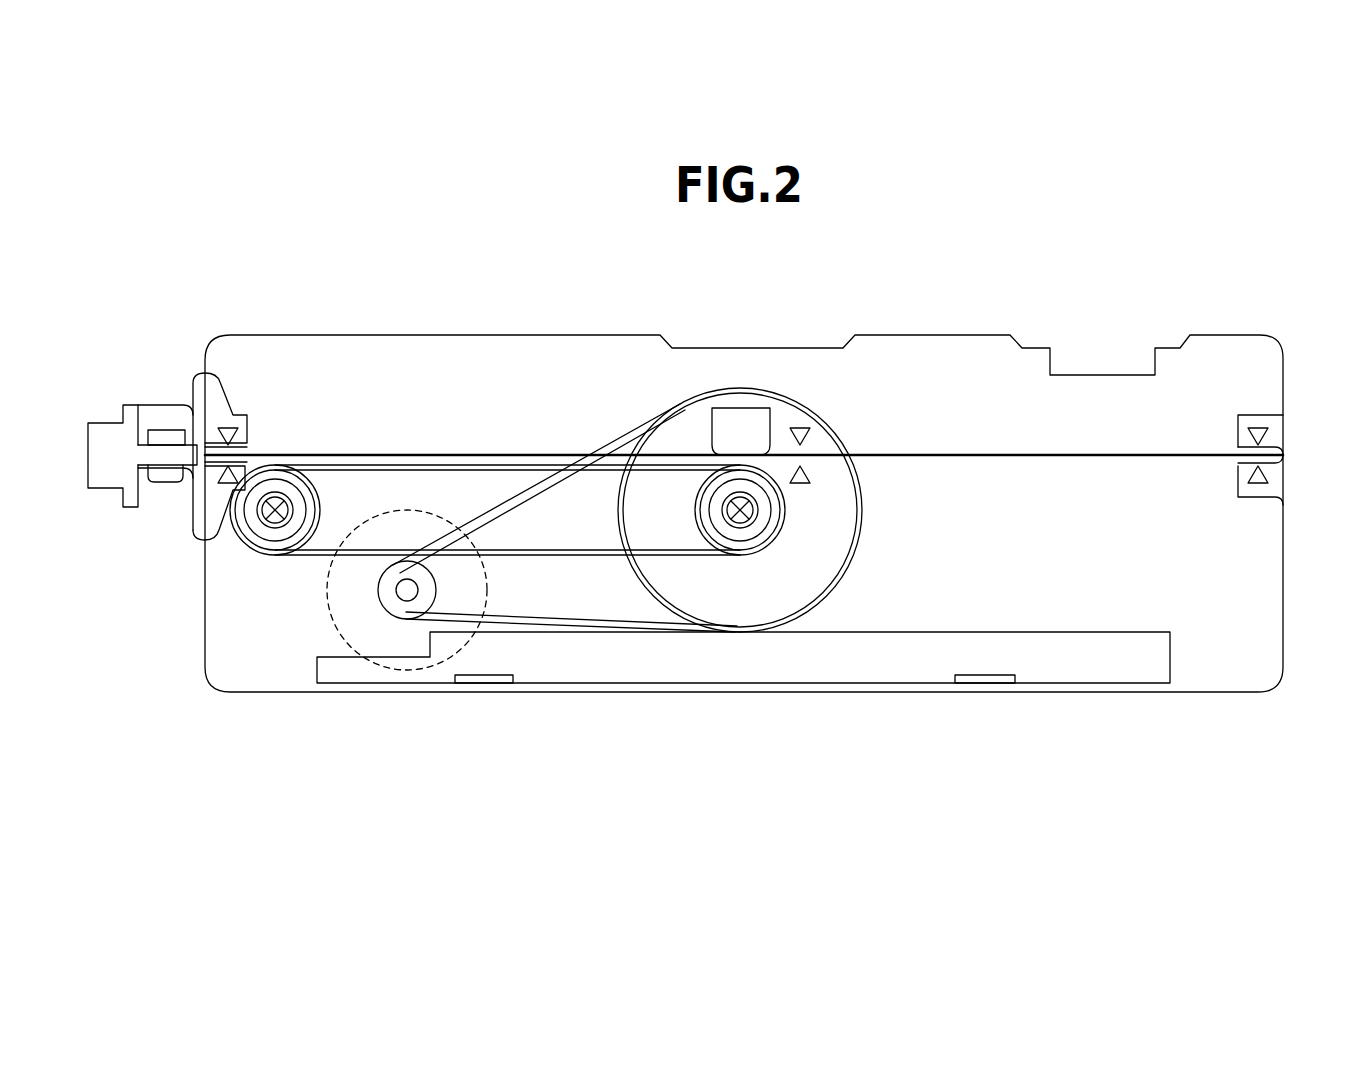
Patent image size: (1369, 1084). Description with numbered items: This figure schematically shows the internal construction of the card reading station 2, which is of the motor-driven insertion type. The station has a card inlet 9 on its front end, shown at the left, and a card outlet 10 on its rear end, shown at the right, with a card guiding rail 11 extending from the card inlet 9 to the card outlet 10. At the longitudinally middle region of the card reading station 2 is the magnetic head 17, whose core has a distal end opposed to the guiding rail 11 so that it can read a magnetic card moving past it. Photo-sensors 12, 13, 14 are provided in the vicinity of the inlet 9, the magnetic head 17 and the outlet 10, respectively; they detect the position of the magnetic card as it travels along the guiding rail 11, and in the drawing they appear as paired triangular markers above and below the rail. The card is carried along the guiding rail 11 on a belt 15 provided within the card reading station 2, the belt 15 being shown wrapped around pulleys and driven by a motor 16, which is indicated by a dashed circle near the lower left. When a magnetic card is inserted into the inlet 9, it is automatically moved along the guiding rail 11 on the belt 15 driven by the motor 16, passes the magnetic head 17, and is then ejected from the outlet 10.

The card reading station 2 is at (1288, 322).
The card inlet 9 is at (94, 422).
The card outlet 10 is at (1285, 453).
The card guiding rail 11 is at (1102, 455).
The photo-sensor 12 is at (213, 528).
The photo-sensor 13 is at (800, 482).
The photo-sensor 14 is at (1258, 472).
The belt 15 is at (507, 466).
The motor 16 is at (450, 585).
The magnetic head 17 is at (714, 408).